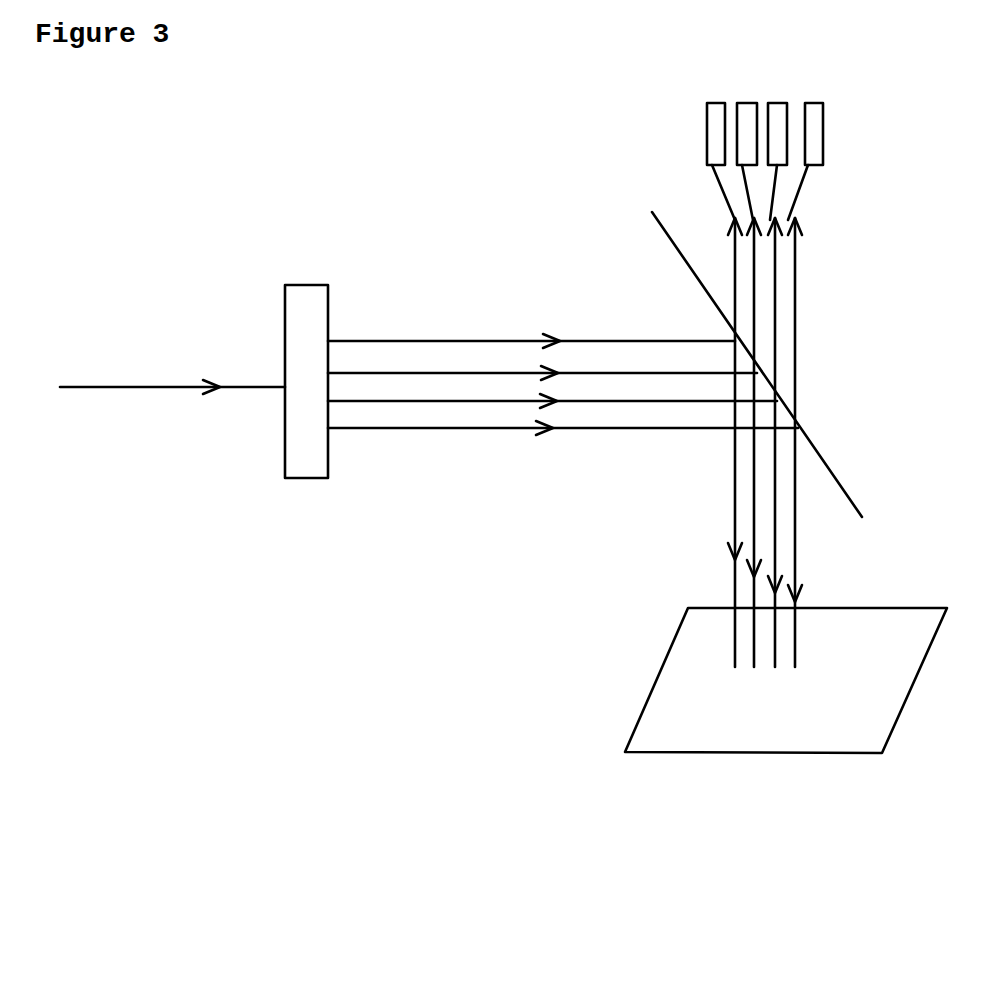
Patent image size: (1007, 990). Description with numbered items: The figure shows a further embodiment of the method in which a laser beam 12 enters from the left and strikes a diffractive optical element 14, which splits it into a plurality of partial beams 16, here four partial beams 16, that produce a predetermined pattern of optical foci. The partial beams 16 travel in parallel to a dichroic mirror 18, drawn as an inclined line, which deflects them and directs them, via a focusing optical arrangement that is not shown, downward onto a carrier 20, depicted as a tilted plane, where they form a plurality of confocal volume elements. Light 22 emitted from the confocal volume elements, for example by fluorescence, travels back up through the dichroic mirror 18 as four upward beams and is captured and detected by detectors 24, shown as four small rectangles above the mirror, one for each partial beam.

The laser beam 12 is at (112, 398).
The diffractive optical element 14 is at (307, 500).
The partial beams 16 is at (409, 318).
The dichroic mirror 18 is at (828, 452).
The carrier 20 is at (843, 763).
The light 22 is at (827, 258).
The detectors 24 is at (790, 95).